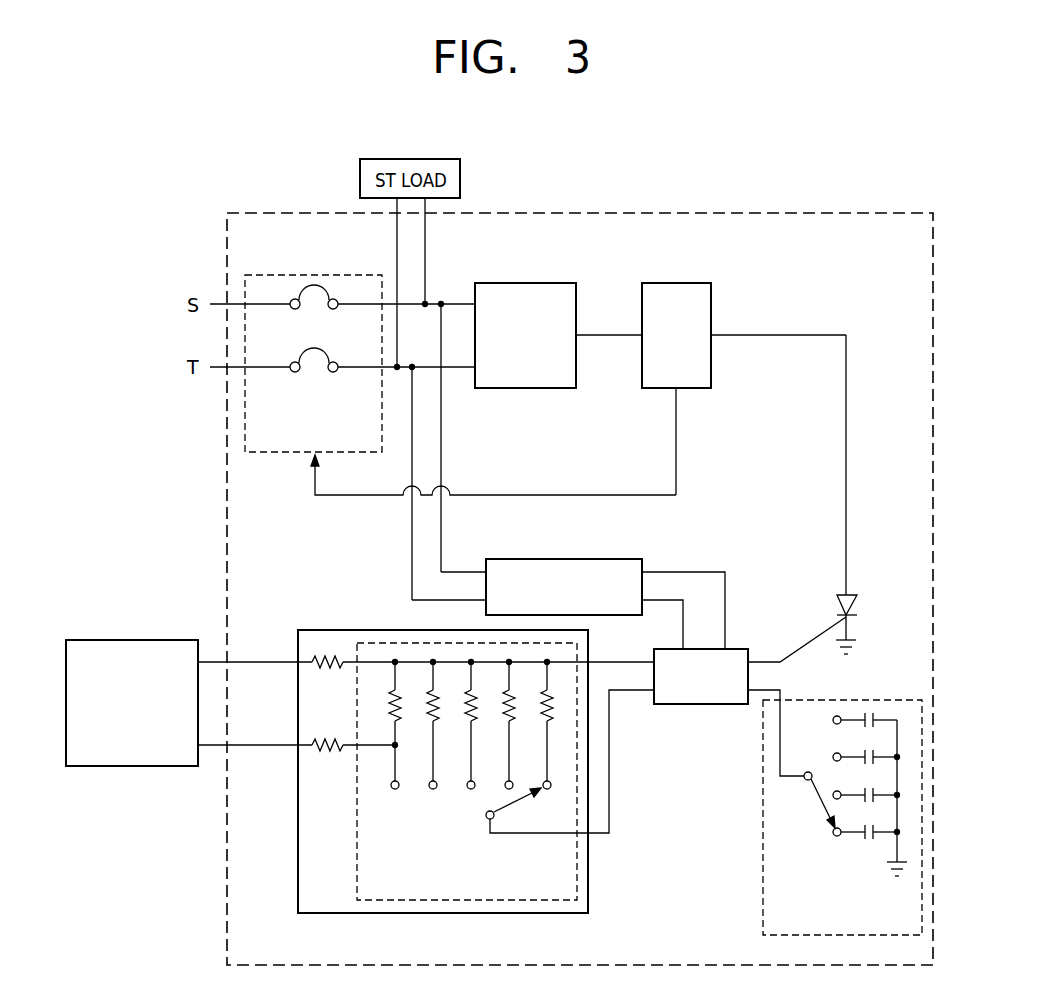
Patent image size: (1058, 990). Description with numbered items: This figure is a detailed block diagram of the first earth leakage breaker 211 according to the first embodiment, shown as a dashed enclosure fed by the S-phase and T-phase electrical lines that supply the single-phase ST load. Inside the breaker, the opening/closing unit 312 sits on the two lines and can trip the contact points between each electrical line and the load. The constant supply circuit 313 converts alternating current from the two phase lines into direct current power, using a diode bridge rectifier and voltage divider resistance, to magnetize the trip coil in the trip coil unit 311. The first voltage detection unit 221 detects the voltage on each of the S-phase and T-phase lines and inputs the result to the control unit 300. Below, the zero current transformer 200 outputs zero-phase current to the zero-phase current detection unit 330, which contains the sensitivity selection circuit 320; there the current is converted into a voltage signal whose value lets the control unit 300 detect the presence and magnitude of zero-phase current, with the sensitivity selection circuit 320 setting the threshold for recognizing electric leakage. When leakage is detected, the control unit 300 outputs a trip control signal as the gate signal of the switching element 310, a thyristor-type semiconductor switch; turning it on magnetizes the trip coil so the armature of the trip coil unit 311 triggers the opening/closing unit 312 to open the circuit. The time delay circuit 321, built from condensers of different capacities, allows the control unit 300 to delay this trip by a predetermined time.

The zero current transformer 200 is at (132, 640).
The first earth leakage breaker 211 is at (611, 212).
The first voltage detection unit 221 is at (528, 559).
The control unit 300 is at (704, 705).
The switching element 310 is at (857, 604).
The trip coil unit 311 is at (676, 283).
The opening/closing unit 312 is at (317, 275).
The constant supply circuit 313 is at (511, 283).
The sensitivity selection circuit 320 is at (426, 792).
The time delay circuit 321 is at (893, 700).
The zero-phase current detection unit 330 is at (588, 892).